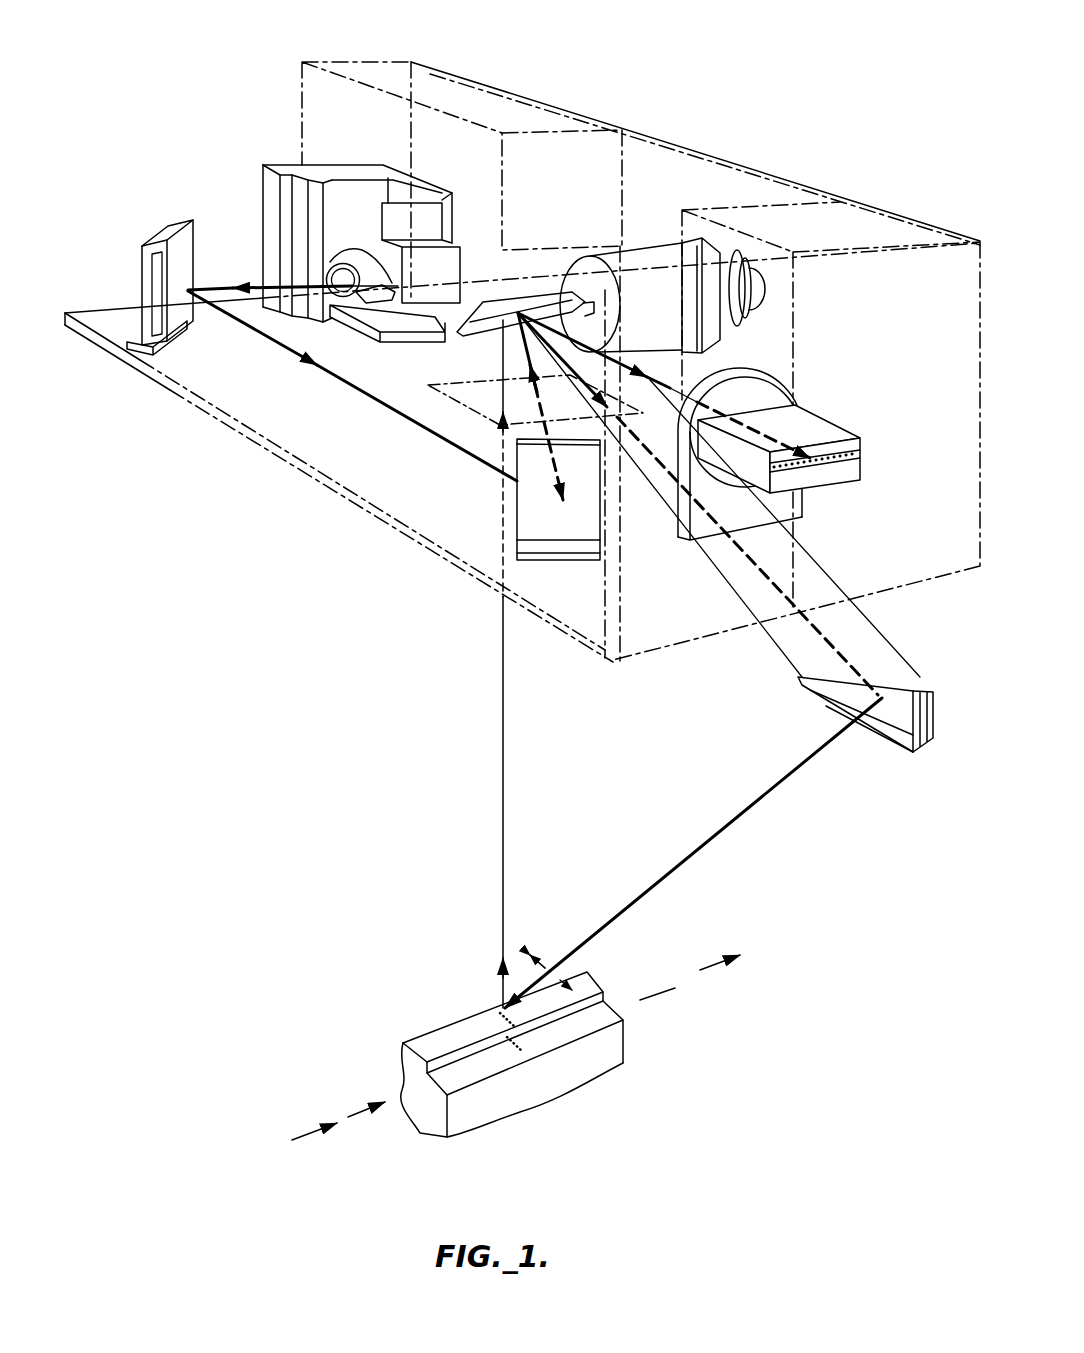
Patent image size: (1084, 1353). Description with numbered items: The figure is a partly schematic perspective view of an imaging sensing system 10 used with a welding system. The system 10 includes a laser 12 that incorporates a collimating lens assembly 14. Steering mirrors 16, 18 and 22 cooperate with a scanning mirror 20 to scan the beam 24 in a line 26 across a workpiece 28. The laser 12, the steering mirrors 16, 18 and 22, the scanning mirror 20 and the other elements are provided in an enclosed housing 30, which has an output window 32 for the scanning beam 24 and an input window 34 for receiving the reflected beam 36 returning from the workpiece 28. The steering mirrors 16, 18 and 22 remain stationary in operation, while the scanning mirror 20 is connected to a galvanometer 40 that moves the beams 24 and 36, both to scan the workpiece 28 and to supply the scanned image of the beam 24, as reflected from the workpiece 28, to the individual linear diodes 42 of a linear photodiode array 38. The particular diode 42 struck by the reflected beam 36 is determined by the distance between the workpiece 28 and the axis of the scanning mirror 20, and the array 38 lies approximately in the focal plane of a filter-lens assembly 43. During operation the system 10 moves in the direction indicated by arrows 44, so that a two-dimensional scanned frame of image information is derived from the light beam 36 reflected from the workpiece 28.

The imaging sensing system 10 is at (522, 601).
The laser 12 is at (338, 168).
The collimating lens assembly 14 is at (326, 270).
The steering mirror 16 is at (141, 270).
The steering mirror 18 is at (552, 563).
The scanning mirror 20 is at (498, 305).
The steering mirror 22 is at (913, 678).
The beam 24 is at (282, 347).
The line 26 is at (524, 1050).
The workpiece 28 is at (470, 1030).
The enclosed housing 30 is at (910, 585).
The output window 32 is at (818, 697).
The input window 34 is at (428, 392).
The reflected beam 36 is at (622, 362).
The linear photodiode array 38 is at (833, 468).
The galvanometer 40 is at (645, 255).
The linear diode 42 is at (858, 441).
The filter-lens assembly 43 is at (736, 372).
The arrows 44 is at (318, 1127).